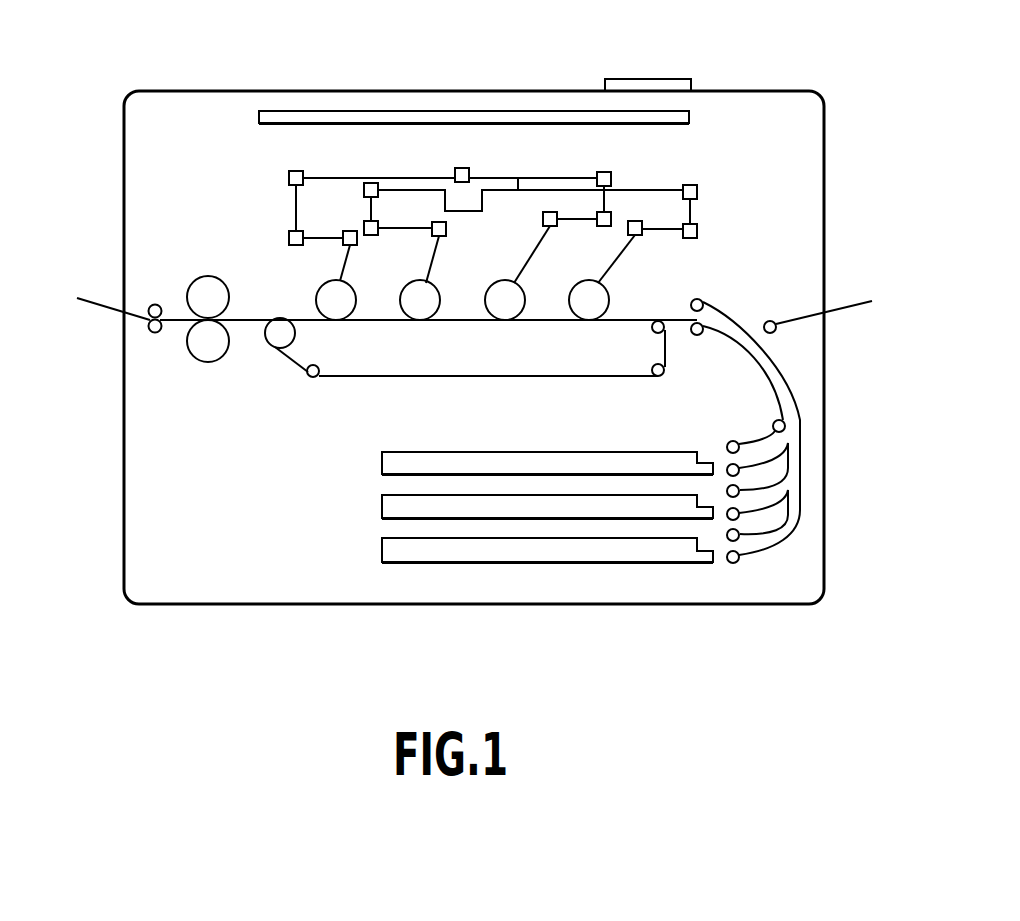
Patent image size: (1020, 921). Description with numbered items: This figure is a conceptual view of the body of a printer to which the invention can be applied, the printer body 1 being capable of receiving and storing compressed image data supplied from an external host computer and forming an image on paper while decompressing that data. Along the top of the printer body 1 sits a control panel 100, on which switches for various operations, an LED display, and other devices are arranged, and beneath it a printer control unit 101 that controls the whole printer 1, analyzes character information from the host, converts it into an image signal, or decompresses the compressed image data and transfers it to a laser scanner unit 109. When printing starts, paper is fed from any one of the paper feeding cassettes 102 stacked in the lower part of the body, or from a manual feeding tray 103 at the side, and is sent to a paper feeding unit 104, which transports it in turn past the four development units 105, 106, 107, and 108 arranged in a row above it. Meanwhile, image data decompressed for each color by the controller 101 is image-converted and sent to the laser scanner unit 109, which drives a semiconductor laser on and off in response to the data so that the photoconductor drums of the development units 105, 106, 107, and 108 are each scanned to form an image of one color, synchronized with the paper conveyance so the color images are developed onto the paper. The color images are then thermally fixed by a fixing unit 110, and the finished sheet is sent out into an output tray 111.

The printer body 1 is at (120, 606).
The control panel 100 is at (640, 79).
The printer control unit 101 is at (462, 111).
The paper feeding cassettes 102 is at (382, 462).
The manual feeding tray 103 is at (828, 316).
The paper feeding unit 104 is at (322, 378).
The development unit 105 is at (592, 322).
The development unit 106 is at (507, 322).
The development unit 107 is at (422, 322).
The development unit 108 is at (340, 322).
The laser scanner unit 109 is at (448, 178).
The fixing unit 110 is at (205, 362).
The output tray 111 is at (112, 308).